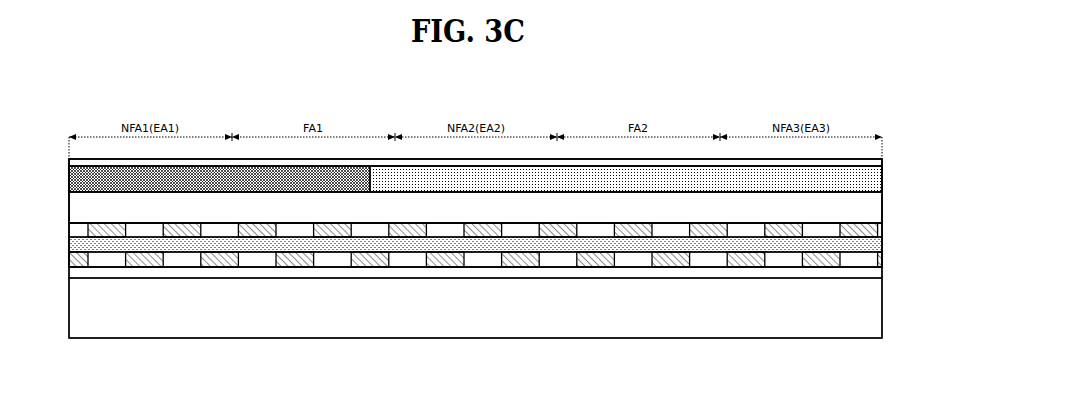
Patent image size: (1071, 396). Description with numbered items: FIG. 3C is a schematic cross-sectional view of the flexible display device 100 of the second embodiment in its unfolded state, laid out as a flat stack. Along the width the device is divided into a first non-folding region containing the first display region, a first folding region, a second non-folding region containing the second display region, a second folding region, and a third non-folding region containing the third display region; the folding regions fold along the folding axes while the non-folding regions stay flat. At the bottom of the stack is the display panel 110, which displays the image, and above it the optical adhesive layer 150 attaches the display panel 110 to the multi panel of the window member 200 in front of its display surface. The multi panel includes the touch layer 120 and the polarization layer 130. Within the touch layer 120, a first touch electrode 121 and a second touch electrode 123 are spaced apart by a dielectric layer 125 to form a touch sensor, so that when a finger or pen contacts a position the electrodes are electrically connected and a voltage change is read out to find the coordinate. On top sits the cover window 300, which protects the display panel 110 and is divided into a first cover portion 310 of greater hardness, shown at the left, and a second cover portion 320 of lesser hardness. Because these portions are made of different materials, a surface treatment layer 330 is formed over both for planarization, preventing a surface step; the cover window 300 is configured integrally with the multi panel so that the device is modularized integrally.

The flexible display device 100 is at (882, 86).
The display panel 110 is at (884, 318).
The touch layer 120 is at (926, 231).
The first touch electrode 121 is at (884, 259).
The second touch electrode 123 is at (884, 227).
The dielectric layer 125 is at (884, 243).
The polarization layer 130 is at (884, 210).
The optical adhesive layer 150 is at (884, 272).
The window member 200 is at (947, 158).
The cover window 300 is at (884, 185).
The first cover portion 310 is at (351, 168).
The second cover portion 320 is at (415, 172).
The surface treatment layer 330 is at (884, 161).